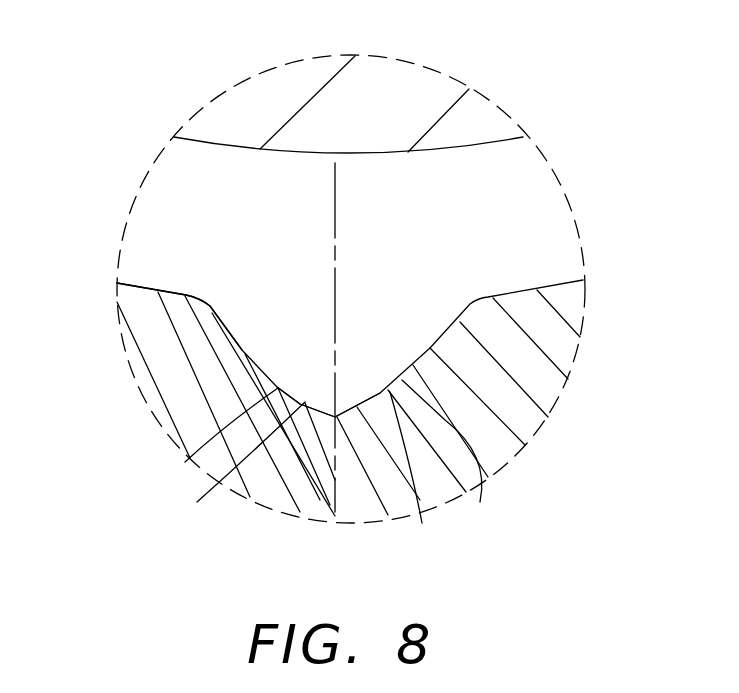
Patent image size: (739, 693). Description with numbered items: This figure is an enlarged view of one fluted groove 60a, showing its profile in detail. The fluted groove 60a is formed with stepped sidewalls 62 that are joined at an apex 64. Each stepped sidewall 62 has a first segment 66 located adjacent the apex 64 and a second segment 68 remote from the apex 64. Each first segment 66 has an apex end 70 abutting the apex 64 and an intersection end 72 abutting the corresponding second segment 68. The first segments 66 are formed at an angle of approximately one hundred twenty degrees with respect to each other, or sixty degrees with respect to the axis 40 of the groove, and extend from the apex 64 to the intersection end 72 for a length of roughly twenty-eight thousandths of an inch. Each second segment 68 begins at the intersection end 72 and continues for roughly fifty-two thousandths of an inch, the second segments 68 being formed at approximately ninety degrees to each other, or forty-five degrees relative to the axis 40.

The axis 40 is at (352, 528).
The fluted groove 60a is at (398, 296).
The stepped sidewall 62 is at (232, 357).
The apex 64 is at (333, 418).
The first segment 66 is at (311, 471).
The second segment 68 is at (230, 328).
The apex end 70 is at (302, 430).
The intersection end 72 is at (185, 462).